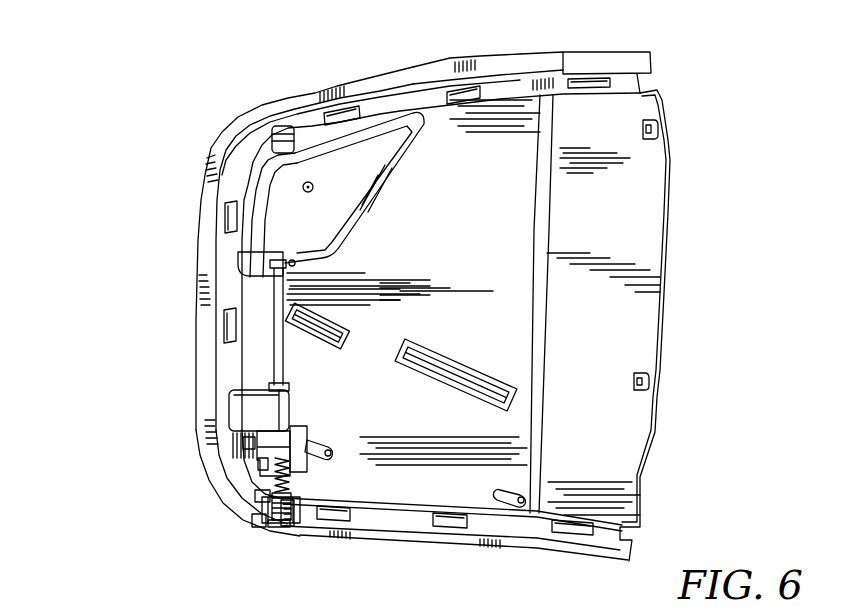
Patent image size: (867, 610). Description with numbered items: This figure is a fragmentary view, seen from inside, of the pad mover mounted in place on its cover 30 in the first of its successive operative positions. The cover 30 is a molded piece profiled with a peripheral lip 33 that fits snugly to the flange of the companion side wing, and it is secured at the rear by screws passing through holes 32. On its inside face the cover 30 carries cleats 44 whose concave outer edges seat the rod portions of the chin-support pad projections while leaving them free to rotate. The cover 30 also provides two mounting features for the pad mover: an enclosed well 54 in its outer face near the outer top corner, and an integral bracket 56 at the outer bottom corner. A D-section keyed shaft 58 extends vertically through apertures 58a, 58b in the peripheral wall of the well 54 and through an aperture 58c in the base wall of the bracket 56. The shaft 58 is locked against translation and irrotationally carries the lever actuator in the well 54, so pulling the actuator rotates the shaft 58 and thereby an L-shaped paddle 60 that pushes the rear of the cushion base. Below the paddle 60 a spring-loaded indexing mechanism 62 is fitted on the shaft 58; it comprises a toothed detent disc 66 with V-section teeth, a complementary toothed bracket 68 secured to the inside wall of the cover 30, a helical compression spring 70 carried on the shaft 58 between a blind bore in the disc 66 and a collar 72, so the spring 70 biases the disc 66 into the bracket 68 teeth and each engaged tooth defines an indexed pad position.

The cover 30 is at (608, 208).
The hole 32 is at (651, 381).
The peripheral lip 33 is at (535, 52).
The cleat 44 is at (488, 363).
The enclosed well 54 is at (360, 178).
The integral bracket 56 is at (264, 524).
The keyed shaft 58 is at (275, 347).
The aperture 58a is at (268, 148).
The aperture 58b is at (240, 254).
The aperture 58c is at (292, 527).
The L-shaped paddle 60 is at (246, 412).
The spring-loaded indexing mechanism 62 is at (140, 499).
The detent disc 66 is at (255, 463).
The bracket 68 is at (252, 443).
The helical compression spring 70 is at (258, 496).
The collar 72 is at (253, 522).